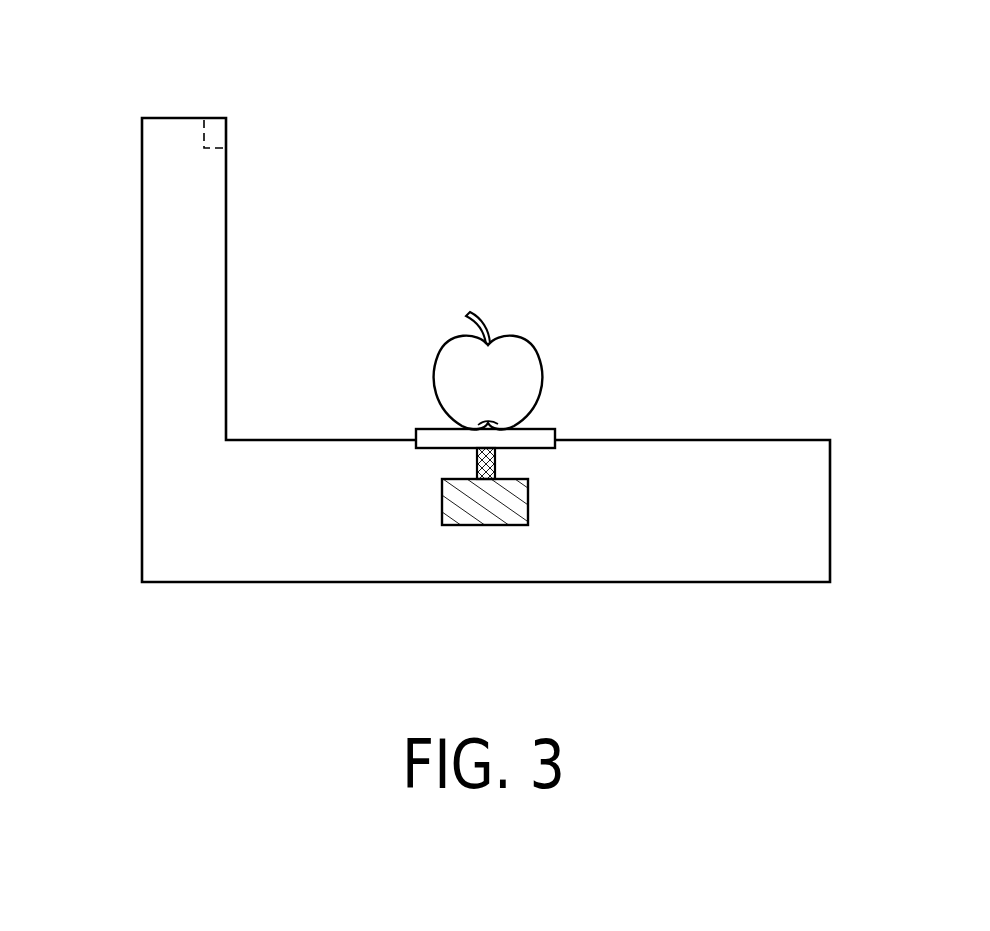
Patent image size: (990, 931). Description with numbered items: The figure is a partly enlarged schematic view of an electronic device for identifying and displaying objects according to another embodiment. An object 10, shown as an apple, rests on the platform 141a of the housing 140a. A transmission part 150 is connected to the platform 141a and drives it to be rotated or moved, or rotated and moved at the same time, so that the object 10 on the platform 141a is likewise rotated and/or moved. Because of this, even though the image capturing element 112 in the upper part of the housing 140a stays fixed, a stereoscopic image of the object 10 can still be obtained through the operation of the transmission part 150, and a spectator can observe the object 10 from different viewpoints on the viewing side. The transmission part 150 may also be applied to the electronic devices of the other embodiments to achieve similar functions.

The object 10 is at (527, 357).
The image capturing element 112 is at (212, 130).
The housing 140a is at (830, 508).
The platform 141a is at (545, 433).
The transmission part 150 is at (488, 513).